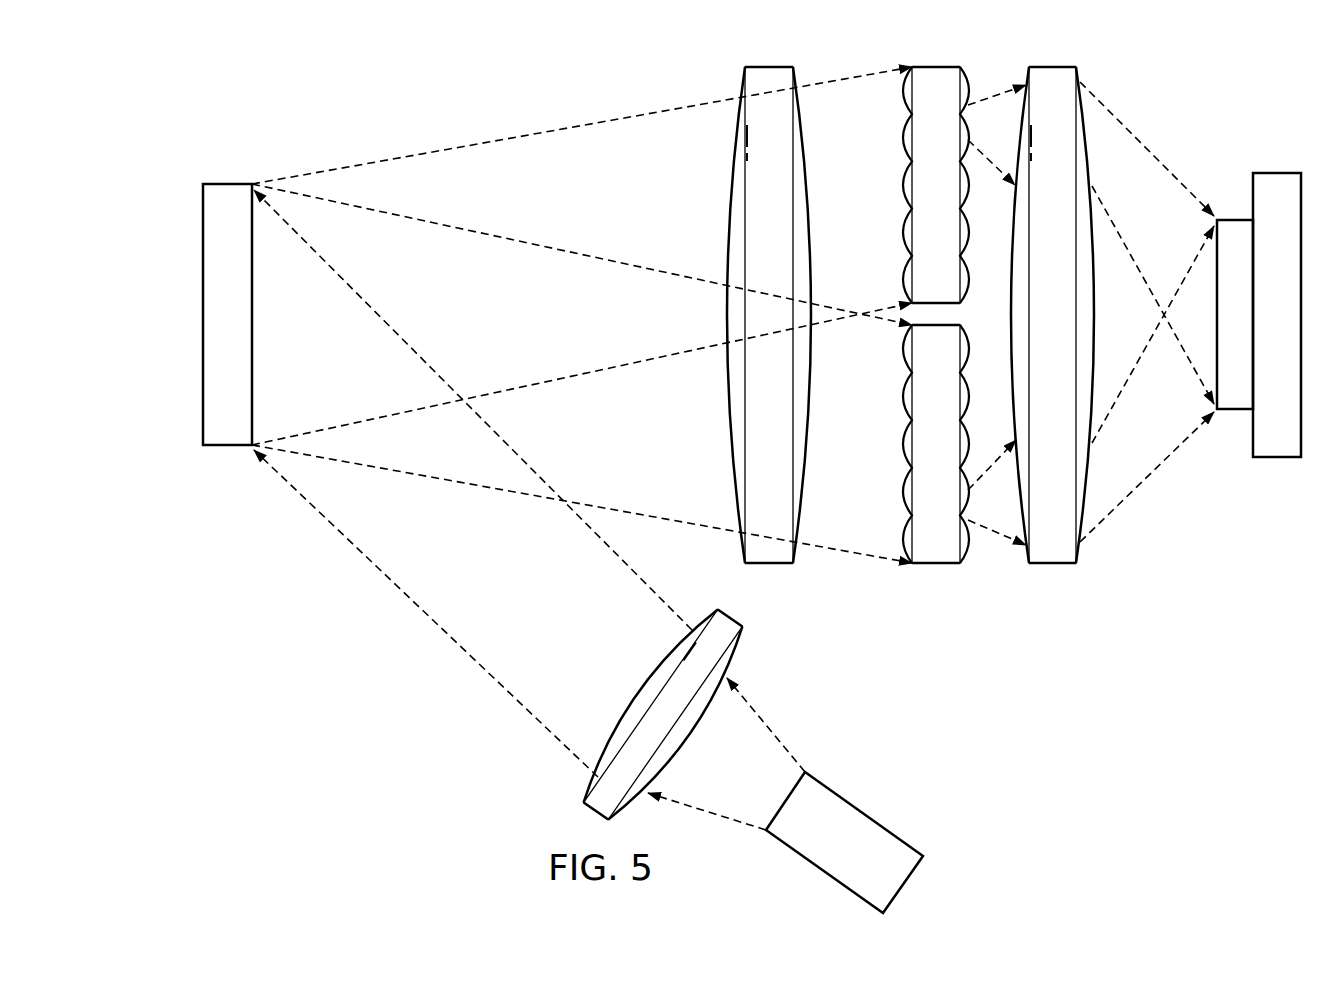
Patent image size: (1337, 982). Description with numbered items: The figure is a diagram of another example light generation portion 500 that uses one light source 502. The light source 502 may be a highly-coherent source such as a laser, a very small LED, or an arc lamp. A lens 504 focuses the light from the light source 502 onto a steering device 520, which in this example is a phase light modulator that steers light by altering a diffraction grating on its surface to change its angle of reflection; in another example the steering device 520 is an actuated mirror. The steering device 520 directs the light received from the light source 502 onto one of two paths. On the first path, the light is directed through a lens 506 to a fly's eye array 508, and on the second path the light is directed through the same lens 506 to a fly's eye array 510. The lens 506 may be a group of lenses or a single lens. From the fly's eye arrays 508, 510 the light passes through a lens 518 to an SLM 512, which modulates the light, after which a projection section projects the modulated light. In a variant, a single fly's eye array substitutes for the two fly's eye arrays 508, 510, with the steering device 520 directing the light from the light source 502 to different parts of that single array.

The light generation portion 500 is at (1178, 65).
The light source 502 is at (864, 810).
The lens 504 is at (633, 691).
The lens 506 is at (769, 66).
The fly's eye array 508 is at (935, 566).
The fly's eye array 510 is at (935, 66).
The SLM 512 is at (1278, 172).
The lens 518 is at (1053, 66).
The steering device 520 is at (203, 318).